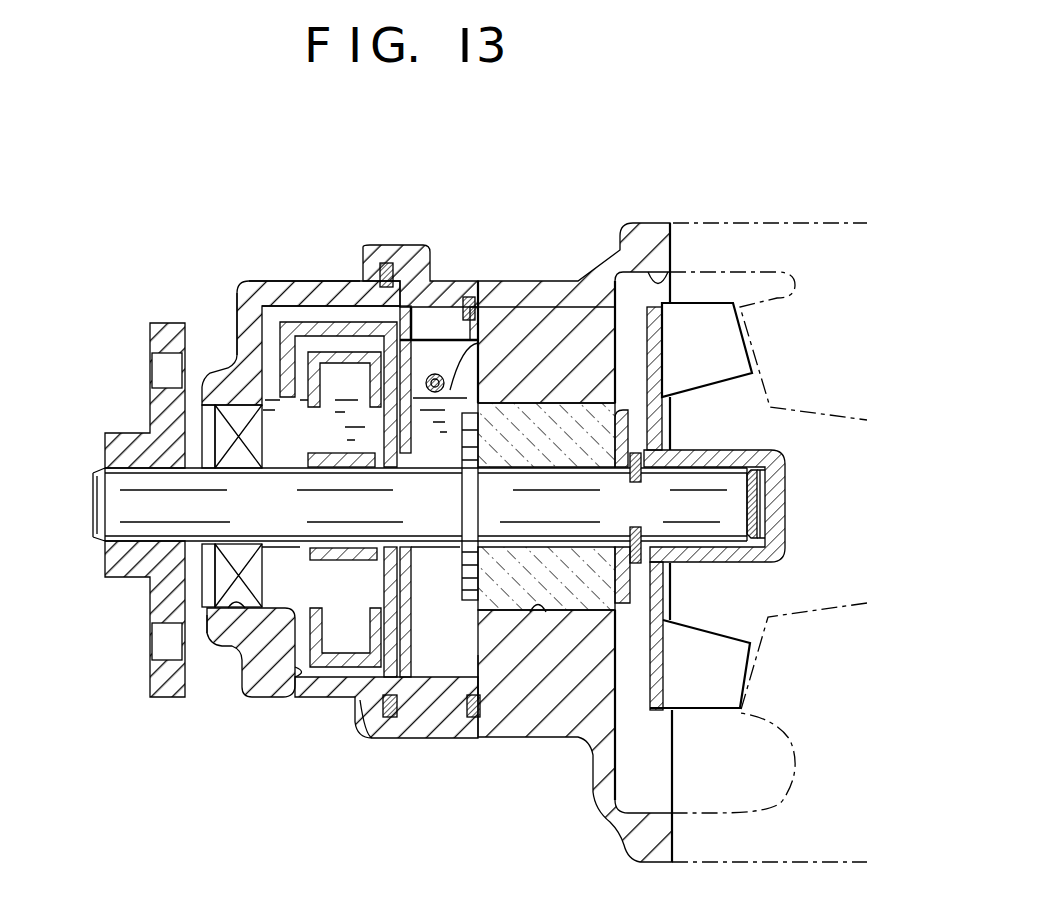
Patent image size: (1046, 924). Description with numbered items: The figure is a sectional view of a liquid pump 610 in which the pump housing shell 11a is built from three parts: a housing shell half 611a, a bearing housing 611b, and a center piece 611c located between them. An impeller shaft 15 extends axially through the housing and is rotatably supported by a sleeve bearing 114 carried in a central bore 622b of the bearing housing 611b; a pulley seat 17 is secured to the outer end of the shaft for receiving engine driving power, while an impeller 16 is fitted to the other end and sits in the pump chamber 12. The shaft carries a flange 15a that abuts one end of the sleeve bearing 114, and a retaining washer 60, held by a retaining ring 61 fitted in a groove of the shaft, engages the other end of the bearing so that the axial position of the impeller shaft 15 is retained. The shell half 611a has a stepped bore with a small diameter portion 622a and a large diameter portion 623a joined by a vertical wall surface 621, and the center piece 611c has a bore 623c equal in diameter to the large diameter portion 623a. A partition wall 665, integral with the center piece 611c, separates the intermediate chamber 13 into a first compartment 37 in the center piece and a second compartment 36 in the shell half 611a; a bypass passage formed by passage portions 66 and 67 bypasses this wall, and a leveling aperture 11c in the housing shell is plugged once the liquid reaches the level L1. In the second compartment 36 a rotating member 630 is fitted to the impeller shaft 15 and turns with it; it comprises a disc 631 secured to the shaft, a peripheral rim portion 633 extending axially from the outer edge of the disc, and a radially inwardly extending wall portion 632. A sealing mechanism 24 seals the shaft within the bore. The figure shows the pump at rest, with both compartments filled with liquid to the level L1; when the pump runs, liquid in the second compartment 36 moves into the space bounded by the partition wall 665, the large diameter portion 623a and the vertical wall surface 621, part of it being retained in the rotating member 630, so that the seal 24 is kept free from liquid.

The impeller shaft 15 is at (280, 520).
The flange 15a is at (467, 600).
The pulley seat 17 is at (120, 448).
The sealing mechanism 24 is at (222, 578).
The vertical wall surface 621 is at (307, 703).
The small diameter portion 622a is at (242, 650).
The housing shell half 611a is at (217, 631).
The radially inwardly extending wall portion 632 is at (313, 380).
The disc 631 is at (377, 443).
The peripheral rim portion 633 is at (335, 660).
The partition wall 665 is at (390, 458).
The passage portion 66 is at (270, 317).
The rotating member 630 is at (305, 440).
The second compartment 36 is at (323, 596).
The first compartment 37 is at (450, 618).
The center piece 611c is at (410, 265).
The passage portion 67 is at (418, 317).
The bearing housing 611b is at (557, 307).
The intermediate chamber 13 is at (443, 368).
The leveling aperture 11c is at (450, 388).
The liquid level L1 is at (480, 337).
The pump chamber 12 is at (672, 290).
The impeller 16 is at (730, 347).
The retaining ring 61 is at (655, 440).
The retaining washer 60 is at (630, 587).
The sleeve bearing 114 is at (577, 612).
The central bore 622b is at (543, 612).
The bore 623c is at (487, 645).
The large diameter portion 623a is at (350, 700).
The liquid pump 610 is at (327, 265).
The pump housing shell 11a is at (250, 282).